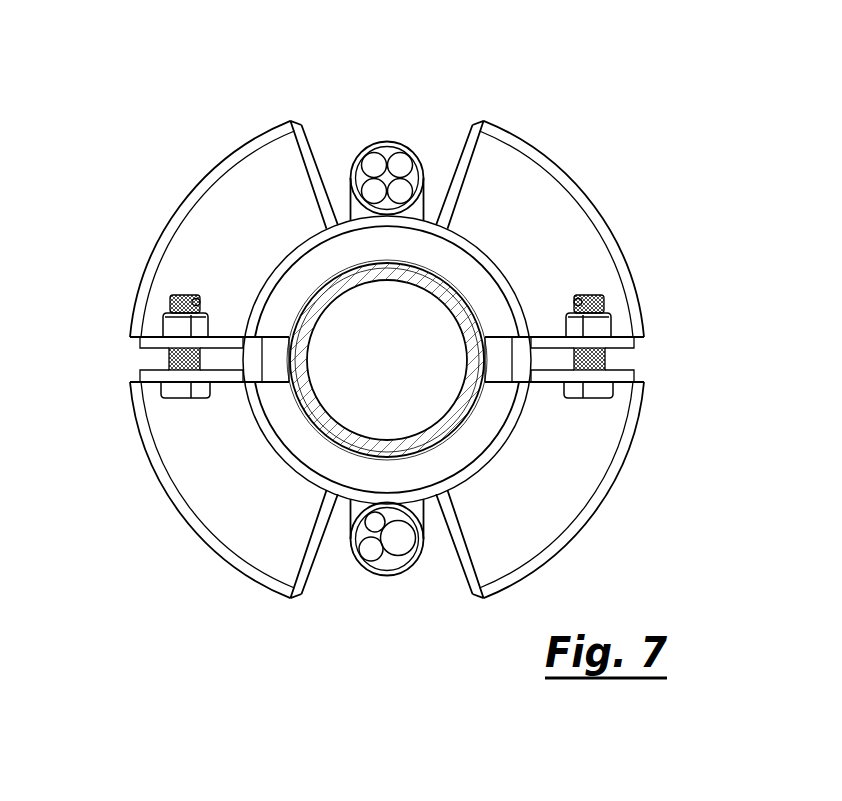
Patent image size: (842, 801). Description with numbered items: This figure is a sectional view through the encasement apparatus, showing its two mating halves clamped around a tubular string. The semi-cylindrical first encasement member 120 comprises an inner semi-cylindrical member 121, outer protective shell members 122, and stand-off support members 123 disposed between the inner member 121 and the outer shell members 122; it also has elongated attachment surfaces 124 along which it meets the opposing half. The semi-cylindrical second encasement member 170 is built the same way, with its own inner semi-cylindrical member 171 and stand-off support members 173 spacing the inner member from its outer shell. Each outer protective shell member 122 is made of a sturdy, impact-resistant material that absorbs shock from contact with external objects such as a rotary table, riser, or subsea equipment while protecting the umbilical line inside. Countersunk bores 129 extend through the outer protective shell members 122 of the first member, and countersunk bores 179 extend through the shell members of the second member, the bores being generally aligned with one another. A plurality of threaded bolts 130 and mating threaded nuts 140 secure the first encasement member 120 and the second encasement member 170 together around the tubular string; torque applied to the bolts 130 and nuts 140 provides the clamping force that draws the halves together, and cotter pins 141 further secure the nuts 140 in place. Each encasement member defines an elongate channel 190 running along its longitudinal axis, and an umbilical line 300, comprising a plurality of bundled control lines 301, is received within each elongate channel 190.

The first encasement member 120 is at (586, 142).
The inner semi-cylindrical member 121 is at (257, 295).
The outer protective shell member 122 is at (243, 147).
The stand-off support member 123 is at (478, 287).
The elongated attachment surface 124 is at (142, 349).
The countersunk bore 129 is at (192, 197).
The threaded bolt 130 is at (167, 397).
The threaded nut 140 is at (172, 323).
The cotter pin 141 is at (191, 298).
The second encasement member 170 is at (257, 583).
The inner semi-cylindrical member 171 is at (298, 453).
The stand-off support member 173 is at (473, 430).
The countersunk bore 179 is at (177, 510).
The elongate channel 190 is at (432, 157).
The umbilical line 300 is at (355, 158).
The bundled control line 301 is at (401, 152).